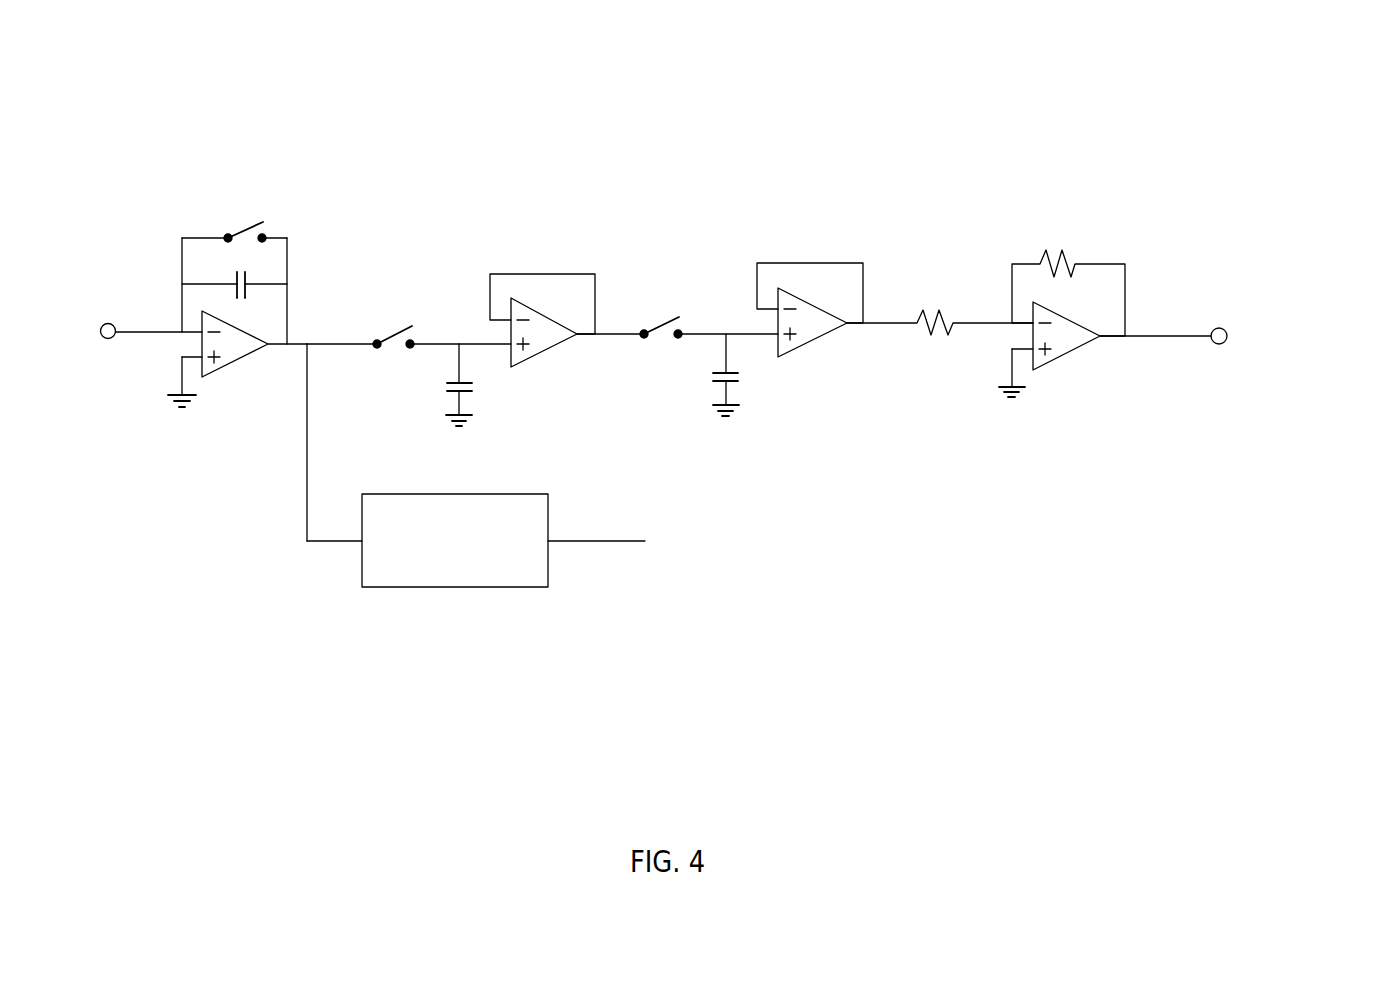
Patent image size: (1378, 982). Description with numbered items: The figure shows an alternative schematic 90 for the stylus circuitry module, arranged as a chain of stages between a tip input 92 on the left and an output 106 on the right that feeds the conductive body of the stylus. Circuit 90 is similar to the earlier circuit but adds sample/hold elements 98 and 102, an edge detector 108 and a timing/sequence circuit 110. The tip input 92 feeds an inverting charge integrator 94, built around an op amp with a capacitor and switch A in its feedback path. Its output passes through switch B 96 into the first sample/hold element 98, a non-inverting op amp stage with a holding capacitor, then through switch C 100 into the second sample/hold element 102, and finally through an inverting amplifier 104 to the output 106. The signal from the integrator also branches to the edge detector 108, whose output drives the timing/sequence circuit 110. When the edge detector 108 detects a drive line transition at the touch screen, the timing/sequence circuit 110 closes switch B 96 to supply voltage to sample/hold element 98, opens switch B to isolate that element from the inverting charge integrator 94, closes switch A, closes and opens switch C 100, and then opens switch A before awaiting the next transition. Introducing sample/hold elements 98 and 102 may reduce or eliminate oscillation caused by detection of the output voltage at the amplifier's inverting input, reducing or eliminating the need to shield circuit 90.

The schematic 90 is at (953, 98).
The tip input 92 is at (109, 323).
The inverting charge integrator 94 is at (207, 426).
The switch B 96 is at (377, 348).
The sample/hold element 98 is at (567, 385).
The switch C 100 is at (640, 337).
The sample/hold element 102 is at (841, 378).
The inverting amplifier 104 is at (1096, 412).
The output to conductive body of stylus 106 is at (1218, 344).
The edge detector 108 is at (450, 571).
The timing/sequence circuit 110 is at (847, 527).